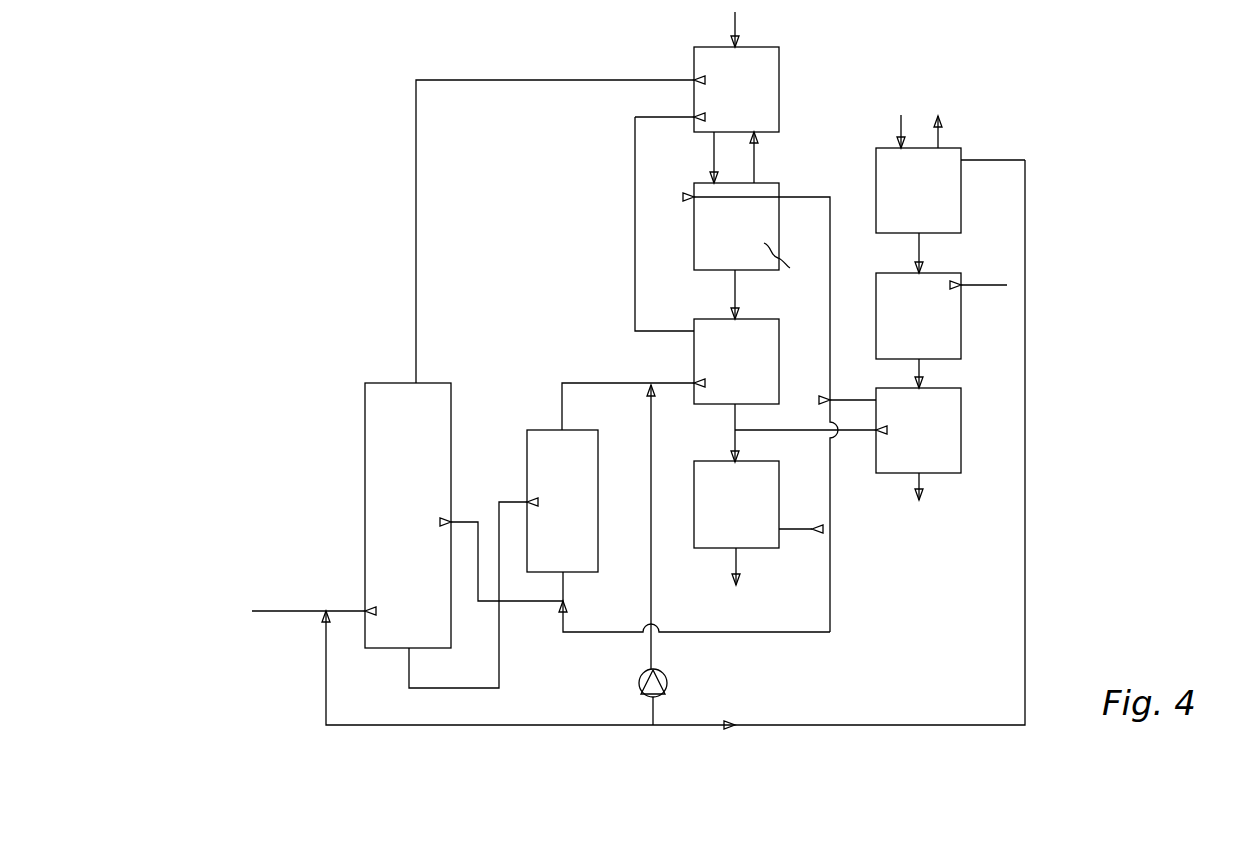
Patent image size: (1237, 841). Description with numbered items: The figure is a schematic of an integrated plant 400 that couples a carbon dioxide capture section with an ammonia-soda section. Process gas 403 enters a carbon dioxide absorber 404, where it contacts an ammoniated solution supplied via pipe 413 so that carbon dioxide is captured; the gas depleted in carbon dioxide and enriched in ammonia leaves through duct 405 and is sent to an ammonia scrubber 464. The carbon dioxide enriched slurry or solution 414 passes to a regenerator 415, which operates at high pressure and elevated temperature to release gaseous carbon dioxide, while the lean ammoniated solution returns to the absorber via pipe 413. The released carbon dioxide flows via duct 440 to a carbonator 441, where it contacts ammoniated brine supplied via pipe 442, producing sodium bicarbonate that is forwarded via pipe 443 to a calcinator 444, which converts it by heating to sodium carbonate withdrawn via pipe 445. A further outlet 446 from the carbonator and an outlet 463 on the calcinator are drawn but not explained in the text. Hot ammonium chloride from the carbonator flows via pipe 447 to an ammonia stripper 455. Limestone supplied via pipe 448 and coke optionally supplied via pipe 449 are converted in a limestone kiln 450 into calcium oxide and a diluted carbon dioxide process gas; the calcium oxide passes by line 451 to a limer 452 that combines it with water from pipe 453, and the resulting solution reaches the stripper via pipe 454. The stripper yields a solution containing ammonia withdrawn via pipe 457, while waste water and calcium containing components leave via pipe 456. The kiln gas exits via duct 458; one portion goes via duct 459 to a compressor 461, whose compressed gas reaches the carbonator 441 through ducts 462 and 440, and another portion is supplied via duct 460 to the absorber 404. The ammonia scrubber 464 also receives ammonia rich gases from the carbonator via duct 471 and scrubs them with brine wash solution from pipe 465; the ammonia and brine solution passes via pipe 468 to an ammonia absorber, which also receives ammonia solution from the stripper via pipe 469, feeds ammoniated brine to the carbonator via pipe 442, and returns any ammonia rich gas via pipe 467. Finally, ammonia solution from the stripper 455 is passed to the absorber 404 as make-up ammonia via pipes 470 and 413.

The integrated plant 400 is at (305, 112).
The process gas 403 is at (326, 606).
The carbon dioxide absorber 404 is at (378, 476).
The duct 405 is at (416, 300).
The pipe 413 is at (525, 604).
The carbon dioxide enriched slurry or solution 414 is at (499, 668).
The regenerator 415 is at (598, 482).
The duct 440 is at (574, 381).
The carbonator 441 is at (694, 360).
The pipe 442 is at (737, 292).
The pipe 443 is at (738, 436).
The calcinator 444 is at (694, 550).
The pipe 445 is at (740, 565).
The stream 446 is at (730, 422).
The pipe 447 is at (795, 429).
The pipe 448 is at (899, 128).
The pipe 449 is at (940, 132).
The limestone kiln 450 is at (961, 180).
The stream 451 is at (921, 246).
The limer 452 is at (945, 336).
The pipe 453 is at (986, 290).
The pipe 454 is at (922, 372).
The ammonia stripper 455 is at (961, 436).
The pipe 456 is at (921, 490).
The pipe 457 is at (864, 398).
The duct 458 is at (1027, 248).
The duct 459 is at (656, 710).
The duct 460 is at (557, 737).
The compressor 461 is at (664, 680).
The duct 462 is at (651, 558).
The outlet stream 463 is at (790, 526).
The ammonia scrubber 464 is at (770, 82).
The pipe 465 is at (738, 13).
The pipe 467 is at (757, 162).
The pipe 468 is at (712, 164).
The pipe 469 is at (832, 243).
The pipe 470 is at (792, 637).
The duct 471 is at (635, 212).